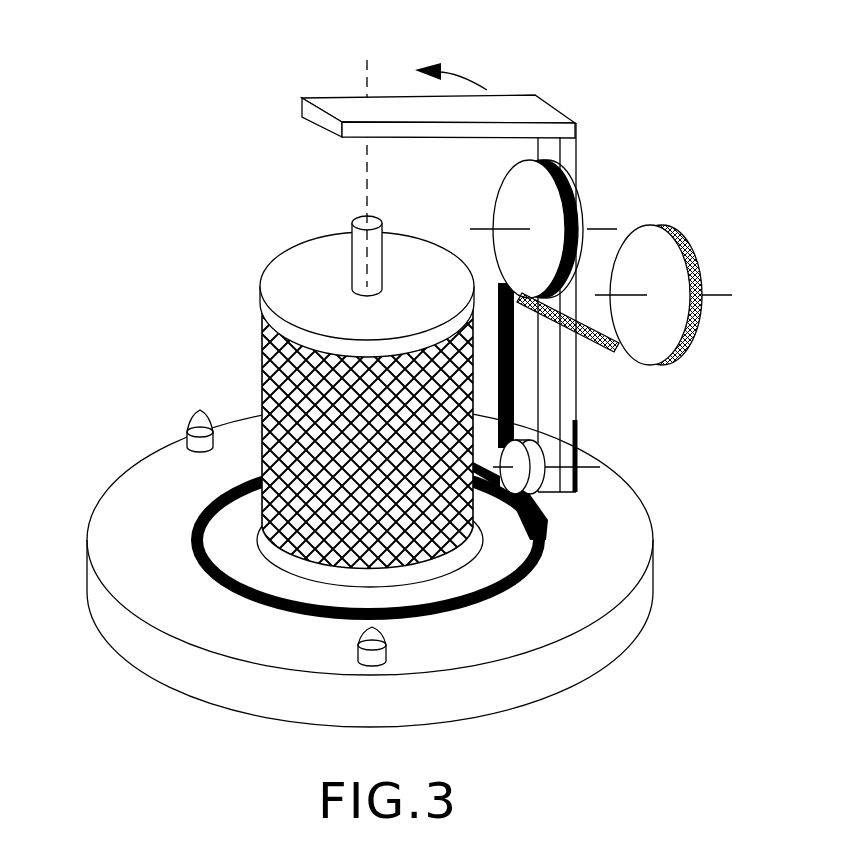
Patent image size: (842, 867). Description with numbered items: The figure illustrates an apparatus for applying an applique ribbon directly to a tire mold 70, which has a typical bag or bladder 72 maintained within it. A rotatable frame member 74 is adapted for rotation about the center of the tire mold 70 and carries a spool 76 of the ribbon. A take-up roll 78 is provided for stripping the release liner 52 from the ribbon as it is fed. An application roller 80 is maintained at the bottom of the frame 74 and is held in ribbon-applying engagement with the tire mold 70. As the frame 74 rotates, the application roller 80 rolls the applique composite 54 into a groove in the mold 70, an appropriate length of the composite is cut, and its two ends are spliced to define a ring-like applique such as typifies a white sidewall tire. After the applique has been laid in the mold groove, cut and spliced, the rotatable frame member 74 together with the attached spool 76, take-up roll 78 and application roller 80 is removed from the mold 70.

The tire mold 70 is at (628, 630).
The applique composite 54 is at (532, 560).
The bag or bladder 72 is at (450, 423).
The rotatable frame member 74 is at (570, 113).
The spool 76 is at (583, 195).
The release liner 52 is at (610, 347).
The take-up roll 78 is at (657, 250).
The application roller 80 is at (540, 488).